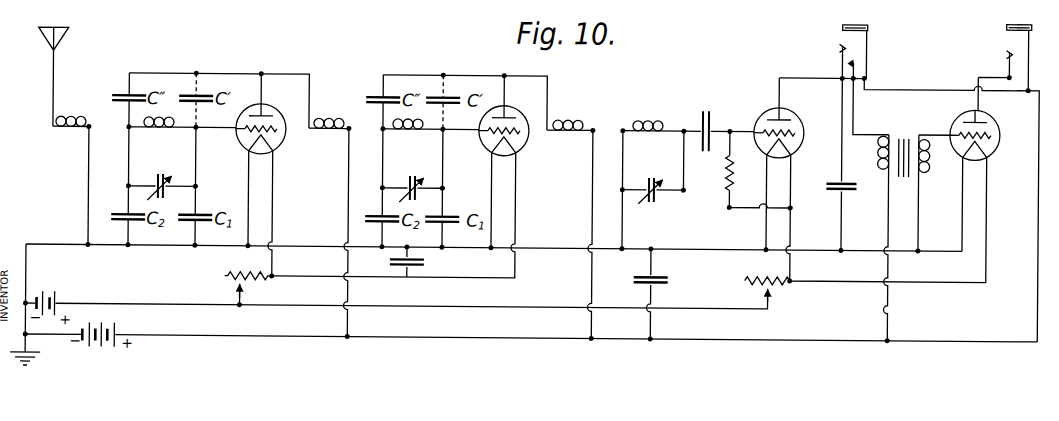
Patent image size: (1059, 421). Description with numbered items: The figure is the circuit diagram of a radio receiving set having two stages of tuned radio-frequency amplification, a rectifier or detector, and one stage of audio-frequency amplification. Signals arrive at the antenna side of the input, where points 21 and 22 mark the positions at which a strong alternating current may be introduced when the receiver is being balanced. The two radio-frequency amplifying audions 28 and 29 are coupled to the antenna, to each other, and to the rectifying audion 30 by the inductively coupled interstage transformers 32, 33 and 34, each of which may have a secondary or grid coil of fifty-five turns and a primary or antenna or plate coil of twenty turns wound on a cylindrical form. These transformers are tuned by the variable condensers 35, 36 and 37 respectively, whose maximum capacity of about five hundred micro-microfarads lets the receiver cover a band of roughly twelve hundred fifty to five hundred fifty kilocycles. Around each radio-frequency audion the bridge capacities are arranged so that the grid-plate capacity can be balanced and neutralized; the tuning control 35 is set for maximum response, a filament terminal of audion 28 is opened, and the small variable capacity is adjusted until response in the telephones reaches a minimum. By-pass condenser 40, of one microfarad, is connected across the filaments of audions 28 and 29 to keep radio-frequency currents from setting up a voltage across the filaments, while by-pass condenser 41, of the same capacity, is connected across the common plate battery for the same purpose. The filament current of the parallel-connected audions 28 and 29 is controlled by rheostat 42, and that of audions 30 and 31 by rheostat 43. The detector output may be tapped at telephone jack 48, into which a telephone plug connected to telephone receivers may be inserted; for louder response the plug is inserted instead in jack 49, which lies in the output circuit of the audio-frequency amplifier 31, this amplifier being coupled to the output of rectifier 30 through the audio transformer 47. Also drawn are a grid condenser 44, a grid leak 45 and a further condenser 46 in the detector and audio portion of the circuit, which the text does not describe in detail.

The input point 21 is at (66, 37).
The input point 22 is at (32, 354).
The radio-frequency amplifying audion 28 is at (294, 92).
The radio-frequency amplifying audion 29 is at (540, 94).
The rectifying audion 30 is at (822, 98).
The audio-frequency amplifier 31 is at (1018, 106).
The interstage transformer 32 is at (72, 134).
The interstage transformer 33 is at (328, 134).
The interstage transformer 34 is at (573, 134).
The variable condenser 35 is at (157, 176).
The variable condenser 36 is at (409, 175).
The variable condenser 37 is at (646, 175).
The by-pass condenser 40 is at (424, 262).
The by-pass condenser 41 is at (664, 277).
The rheostat 42 is at (225, 280).
The rheostat 43 is at (749, 281).
The grid condenser 44 is at (712, 114).
The grid leak resistance 45 is at (714, 172).
The by-pass condenser 46 is at (855, 184).
The audio transformer 47 is at (910, 138).
The telephone jack 48 is at (864, 37).
The telephone jack 49 is at (1020, 42).